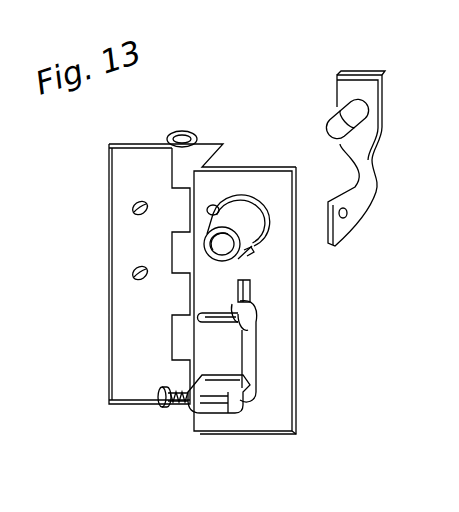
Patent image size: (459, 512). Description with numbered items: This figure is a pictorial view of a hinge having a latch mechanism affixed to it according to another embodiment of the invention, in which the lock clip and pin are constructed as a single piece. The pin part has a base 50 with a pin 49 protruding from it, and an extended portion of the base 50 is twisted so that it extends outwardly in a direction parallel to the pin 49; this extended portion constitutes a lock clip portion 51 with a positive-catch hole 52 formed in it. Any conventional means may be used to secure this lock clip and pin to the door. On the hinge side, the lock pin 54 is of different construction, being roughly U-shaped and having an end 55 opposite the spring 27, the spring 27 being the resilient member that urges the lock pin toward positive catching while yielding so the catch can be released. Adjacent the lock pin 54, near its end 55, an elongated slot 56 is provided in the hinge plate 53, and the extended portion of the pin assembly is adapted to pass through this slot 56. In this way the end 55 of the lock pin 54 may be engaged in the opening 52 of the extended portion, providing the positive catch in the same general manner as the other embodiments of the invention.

The spring 27 is at (178, 407).
The pin 49 is at (328, 131).
The base 50 is at (337, 87).
The lock clip portion 51 is at (370, 173).
The positive-catch hole 52 is at (346, 218).
The hinge plate 53 is at (277, 353).
The lock pin 54 is at (253, 385).
The end 55 is at (203, 313).
The elongated slot 56 is at (247, 287).